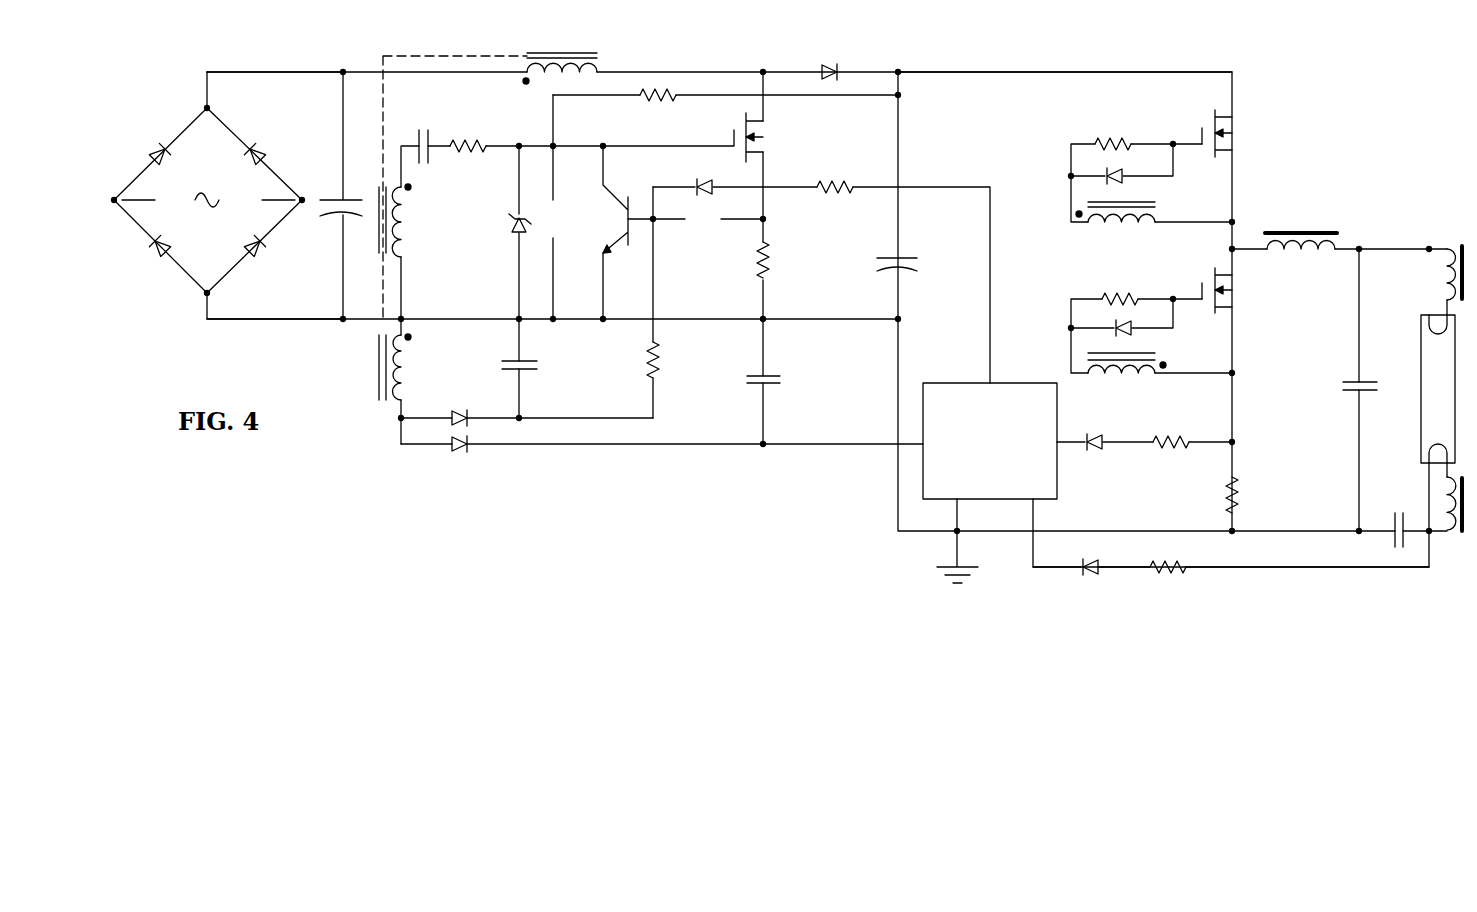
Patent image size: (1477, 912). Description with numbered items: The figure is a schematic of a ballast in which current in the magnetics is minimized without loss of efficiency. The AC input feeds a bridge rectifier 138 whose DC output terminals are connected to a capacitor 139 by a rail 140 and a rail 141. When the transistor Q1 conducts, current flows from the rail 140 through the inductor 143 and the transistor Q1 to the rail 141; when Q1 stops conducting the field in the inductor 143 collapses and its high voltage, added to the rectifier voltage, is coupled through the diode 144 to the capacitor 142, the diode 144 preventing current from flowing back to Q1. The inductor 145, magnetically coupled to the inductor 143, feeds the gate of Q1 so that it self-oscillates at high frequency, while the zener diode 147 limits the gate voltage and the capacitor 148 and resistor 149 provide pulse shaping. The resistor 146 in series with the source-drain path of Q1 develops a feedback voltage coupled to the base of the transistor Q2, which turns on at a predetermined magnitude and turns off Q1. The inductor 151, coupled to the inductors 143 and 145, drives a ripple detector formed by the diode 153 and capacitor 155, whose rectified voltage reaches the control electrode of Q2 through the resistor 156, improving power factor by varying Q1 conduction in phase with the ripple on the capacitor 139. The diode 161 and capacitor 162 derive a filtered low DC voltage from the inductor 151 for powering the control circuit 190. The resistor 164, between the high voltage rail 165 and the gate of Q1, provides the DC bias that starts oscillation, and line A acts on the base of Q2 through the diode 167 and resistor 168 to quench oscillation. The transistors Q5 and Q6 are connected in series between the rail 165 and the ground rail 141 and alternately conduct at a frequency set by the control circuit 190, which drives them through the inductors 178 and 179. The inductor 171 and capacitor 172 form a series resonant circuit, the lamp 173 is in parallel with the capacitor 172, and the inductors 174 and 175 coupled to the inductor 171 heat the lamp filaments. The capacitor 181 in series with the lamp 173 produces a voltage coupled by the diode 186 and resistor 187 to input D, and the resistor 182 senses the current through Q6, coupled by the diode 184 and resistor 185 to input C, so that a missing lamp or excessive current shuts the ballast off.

The bridge rectifier 138 is at (243, 132).
The capacitor 139 is at (330, 197).
The rail 140 is at (231, 72).
The rail 141 is at (232, 322).
The capacitor 142 is at (875, 270).
The inductor 143 is at (553, 55).
The diode 144 is at (830, 62).
The inductor 145 is at (407, 230).
The resistor 146 is at (775, 270).
The zener diode 147 is at (505, 235).
The capacitor 148 is at (423, 130).
The resistor 149 is at (483, 138).
The inductor 151 is at (378, 370).
The diode 153 is at (463, 408).
The capacitor 155 is at (540, 365).
The resistor 156 is at (668, 362).
The diode 161 is at (463, 456).
The capacitor 162 is at (783, 380).
The resistor 164 is at (660, 88).
The high voltage rail 165 is at (1090, 70).
The diode 167 is at (700, 182).
The resistor 168 is at (820, 182).
The inductor 171 is at (1292, 232).
The capacitor 172 is at (1345, 382).
The lamp 173 is at (1420, 354).
The inductor 174 is at (1455, 245).
The inductor 175 is at (1462, 538).
The inductor 178 is at (1160, 208).
The inductor 179 is at (1160, 356).
The capacitor 181 is at (1396, 512).
The resistor 182 is at (1245, 490).
The diode 184 is at (1092, 436).
The resistor 185 is at (1168, 440).
The diode 186 is at (1092, 578).
The resistor 187 is at (1165, 578).
The control circuit 190 is at (970, 383).
The transistor Q1 is at (763, 133).
The transistor Q2 is at (618, 215).
The transistor Q5 is at (1202, 115).
The transistor Q6 is at (1202, 273).